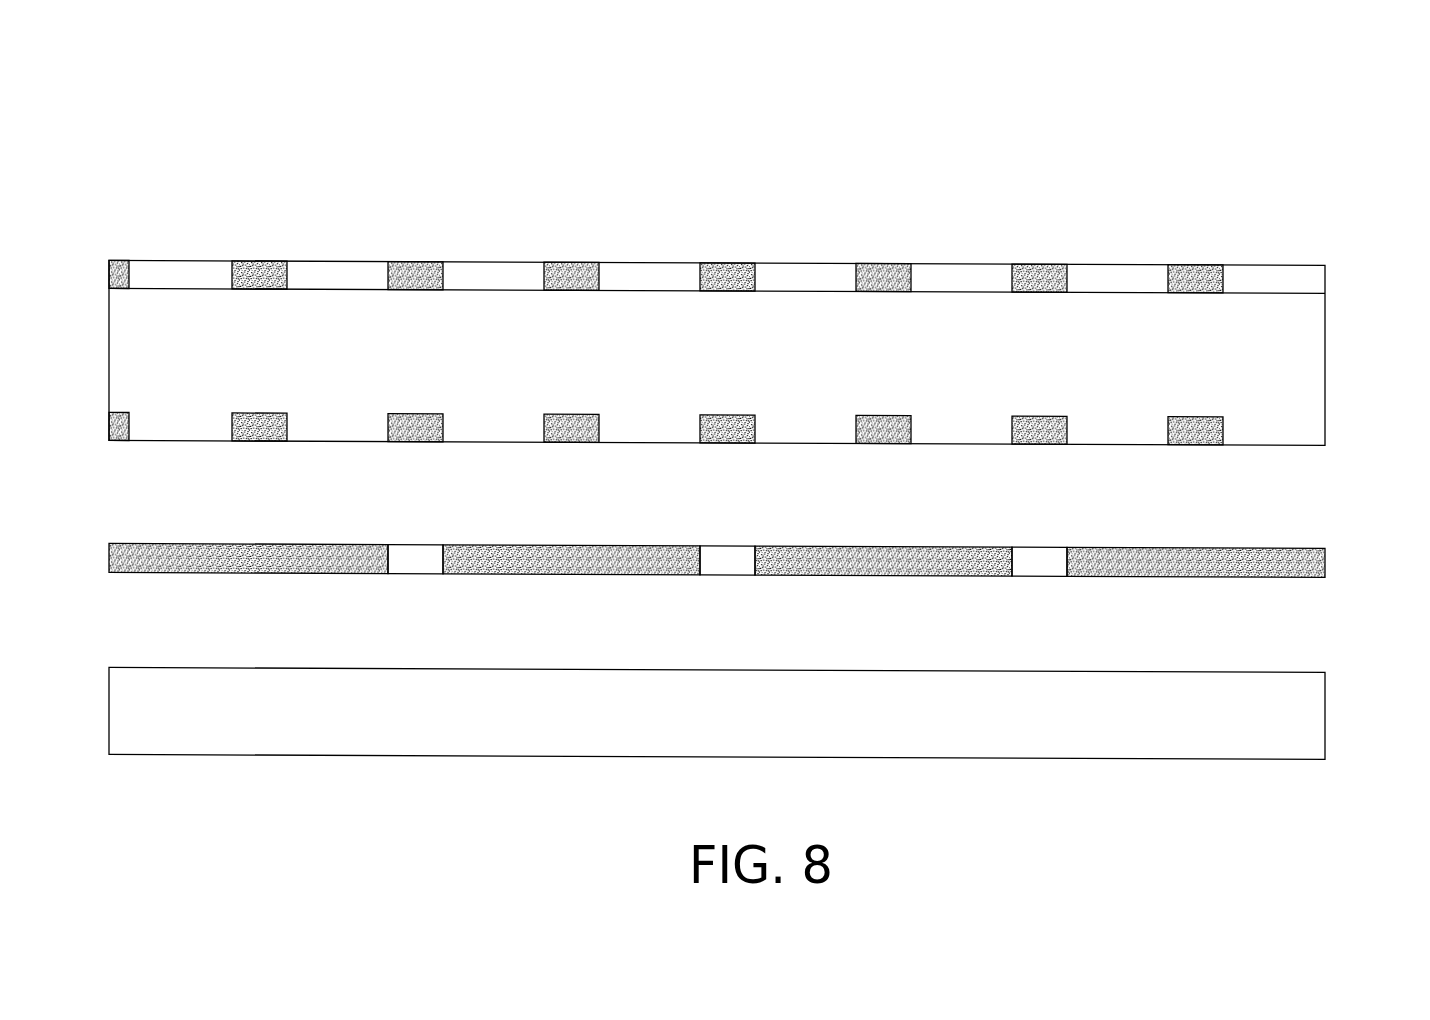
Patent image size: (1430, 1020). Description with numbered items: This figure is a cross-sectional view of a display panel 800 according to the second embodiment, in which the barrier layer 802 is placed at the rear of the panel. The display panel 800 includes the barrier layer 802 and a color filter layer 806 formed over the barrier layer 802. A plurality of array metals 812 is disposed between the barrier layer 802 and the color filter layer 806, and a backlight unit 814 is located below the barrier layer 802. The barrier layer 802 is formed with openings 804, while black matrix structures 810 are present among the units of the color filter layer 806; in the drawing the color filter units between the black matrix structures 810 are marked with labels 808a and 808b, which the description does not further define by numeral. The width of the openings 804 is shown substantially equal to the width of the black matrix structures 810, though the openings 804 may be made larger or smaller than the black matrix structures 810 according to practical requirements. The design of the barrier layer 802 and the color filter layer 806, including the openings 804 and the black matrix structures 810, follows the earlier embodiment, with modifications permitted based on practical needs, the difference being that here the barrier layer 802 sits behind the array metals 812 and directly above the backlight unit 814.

The display panel 800 is at (1403, 61).
The barrier layer 802 is at (756, 529).
The openings 804 is at (1024, 557).
The color filter layer 806 is at (1325, 281).
The second electrode (region 1) 808a is at (1142, 262).
The second electrode (region 2) 808b is at (983, 262).
The black matrix structures 810 is at (875, 262).
The array metals 812 is at (1192, 416).
The backlight unit 814 is at (1325, 722).